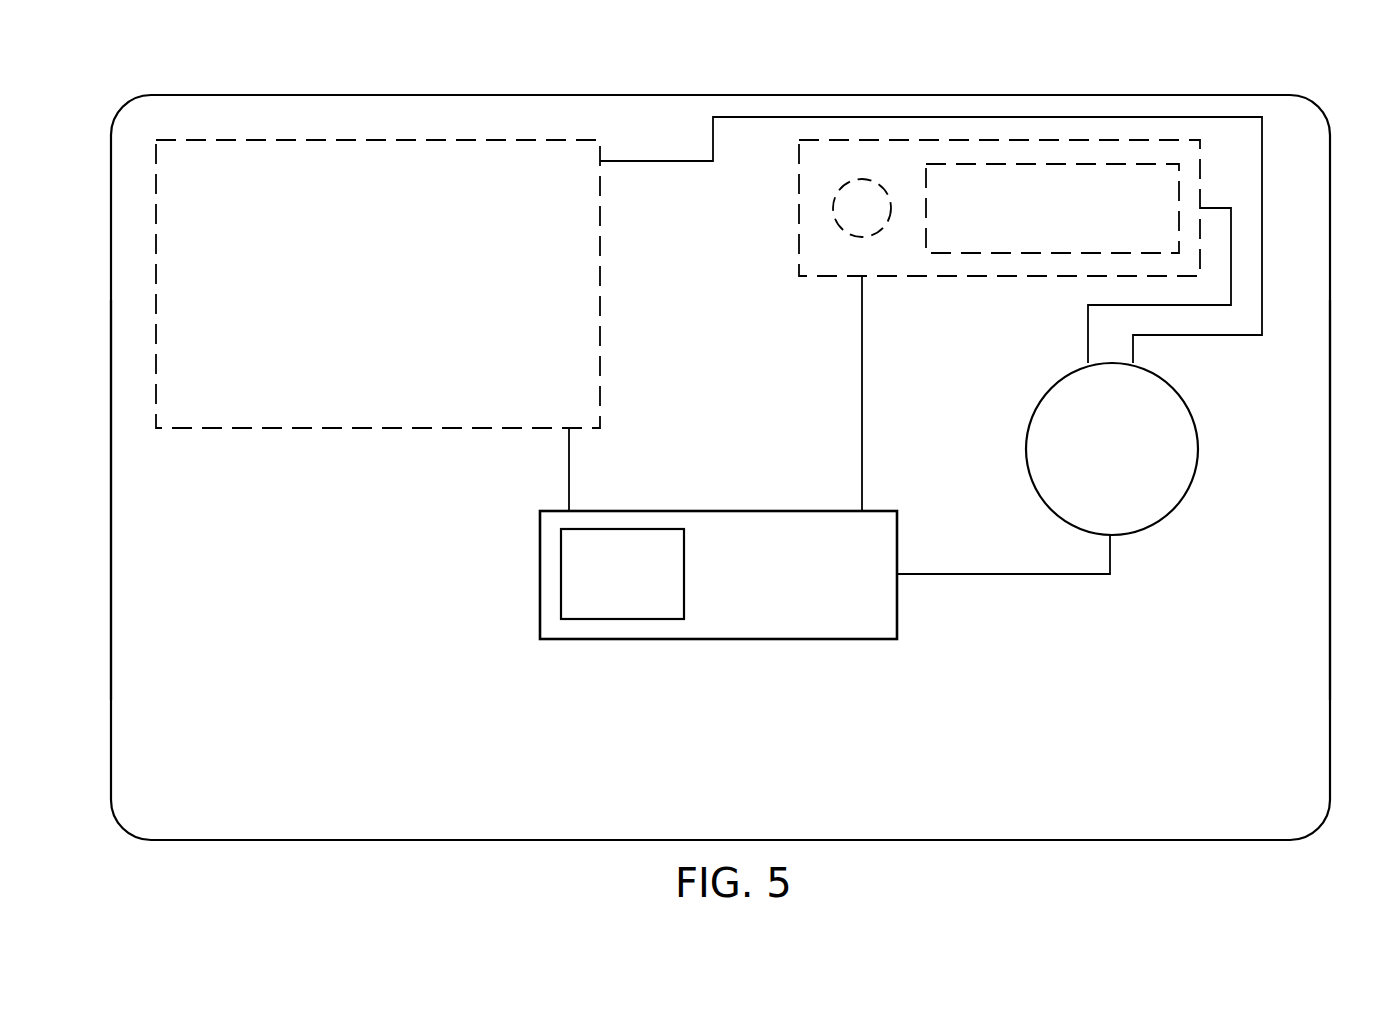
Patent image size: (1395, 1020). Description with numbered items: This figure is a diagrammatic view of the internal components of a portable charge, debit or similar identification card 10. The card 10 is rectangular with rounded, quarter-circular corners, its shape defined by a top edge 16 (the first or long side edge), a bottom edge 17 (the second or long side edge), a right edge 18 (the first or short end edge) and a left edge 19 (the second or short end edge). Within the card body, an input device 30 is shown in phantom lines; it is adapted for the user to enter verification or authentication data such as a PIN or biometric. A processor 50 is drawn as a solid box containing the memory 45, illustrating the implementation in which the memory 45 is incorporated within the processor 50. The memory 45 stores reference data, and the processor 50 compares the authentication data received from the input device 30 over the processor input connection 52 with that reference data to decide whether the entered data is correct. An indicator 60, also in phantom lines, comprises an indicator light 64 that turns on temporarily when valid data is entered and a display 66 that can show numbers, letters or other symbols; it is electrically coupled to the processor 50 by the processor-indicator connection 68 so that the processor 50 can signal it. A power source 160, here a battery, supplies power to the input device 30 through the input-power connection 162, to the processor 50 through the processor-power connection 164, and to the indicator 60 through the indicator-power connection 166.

The card 10 is at (1212, 67).
The top edge 16 is at (805, 95).
The bottom edge 17 is at (507, 842).
The right edge 18 is at (1330, 520).
The left edge 19 is at (111, 510).
The input device 30 is at (277, 140).
The memory 45 is at (608, 590).
The processor 50 is at (775, 590).
The processor input connection 52 is at (569, 468).
The indicator 60 is at (820, 277).
The indicator light 64 is at (858, 210).
The display 66 is at (976, 212).
The processor-indicator connection 68 is at (862, 418).
The power source 160 is at (1090, 464).
The input-power connection 162 is at (1196, 337).
The processor-power connection 164 is at (1020, 576).
The indicator-power connection 166 is at (1088, 348).